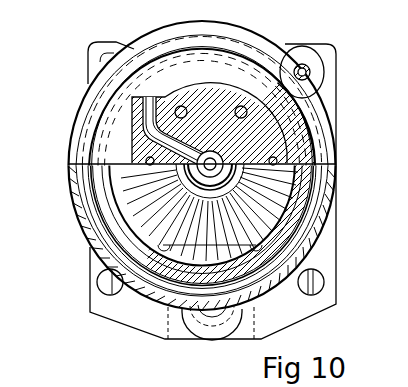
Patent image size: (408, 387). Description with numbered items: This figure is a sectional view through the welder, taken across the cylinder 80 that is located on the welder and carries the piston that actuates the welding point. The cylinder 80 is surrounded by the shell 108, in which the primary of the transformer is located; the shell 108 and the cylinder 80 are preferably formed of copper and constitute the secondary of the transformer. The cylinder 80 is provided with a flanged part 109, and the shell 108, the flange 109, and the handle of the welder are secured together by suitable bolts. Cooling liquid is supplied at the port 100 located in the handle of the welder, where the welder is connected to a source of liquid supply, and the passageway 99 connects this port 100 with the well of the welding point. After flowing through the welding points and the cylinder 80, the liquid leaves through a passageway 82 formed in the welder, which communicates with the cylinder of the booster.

The cylinder 80 is at (330, 167).
The passageway 82 is at (168, 97).
The passageway 99 is at (279, 41).
The port 100 is at (303, 73).
The shell 108 is at (314, 226).
The flanged part 109 is at (259, 143).